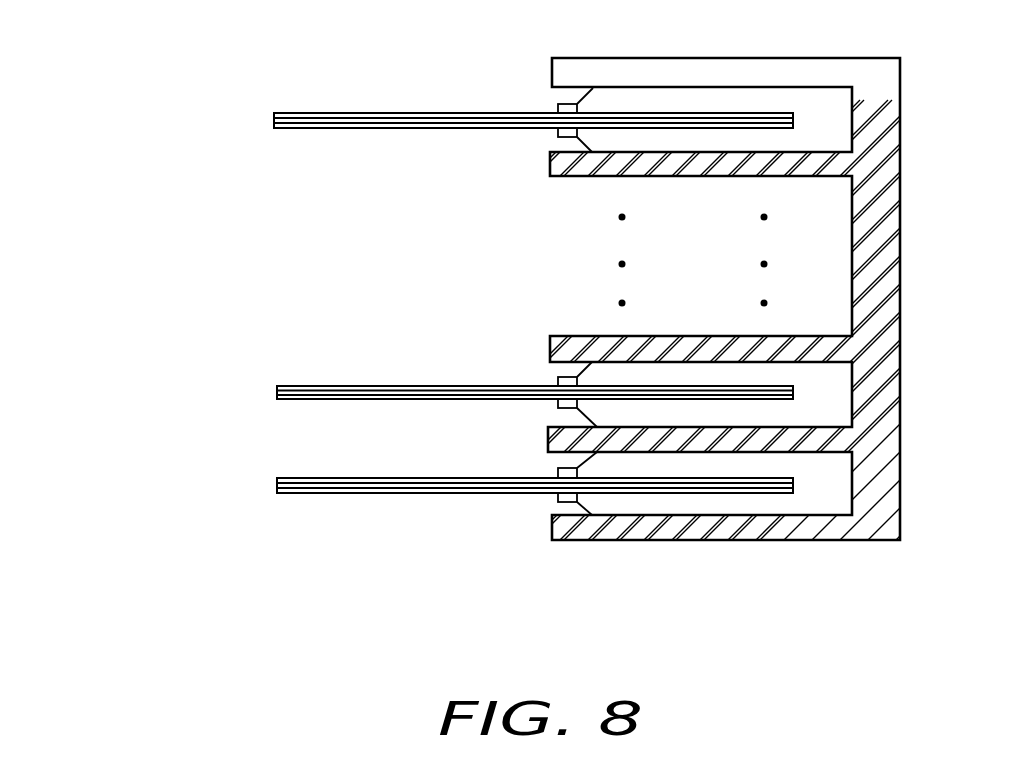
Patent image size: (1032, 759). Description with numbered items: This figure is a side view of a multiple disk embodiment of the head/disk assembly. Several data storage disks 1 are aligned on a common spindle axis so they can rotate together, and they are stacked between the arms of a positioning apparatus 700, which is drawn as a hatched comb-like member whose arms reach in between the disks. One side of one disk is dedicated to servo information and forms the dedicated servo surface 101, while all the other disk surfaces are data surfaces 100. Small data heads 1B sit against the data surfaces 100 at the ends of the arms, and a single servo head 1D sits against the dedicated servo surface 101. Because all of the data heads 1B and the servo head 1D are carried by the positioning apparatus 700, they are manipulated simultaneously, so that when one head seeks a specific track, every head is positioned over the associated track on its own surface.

The positioning apparatus 700 is at (718, 58).
The data storage disk 1 is at (277, 488).
The data surface 100 is at (398, 478).
The dedicated servo surface 101 is at (372, 493).
The data head 1B is at (558, 469).
The servo head 1D is at (558, 498).